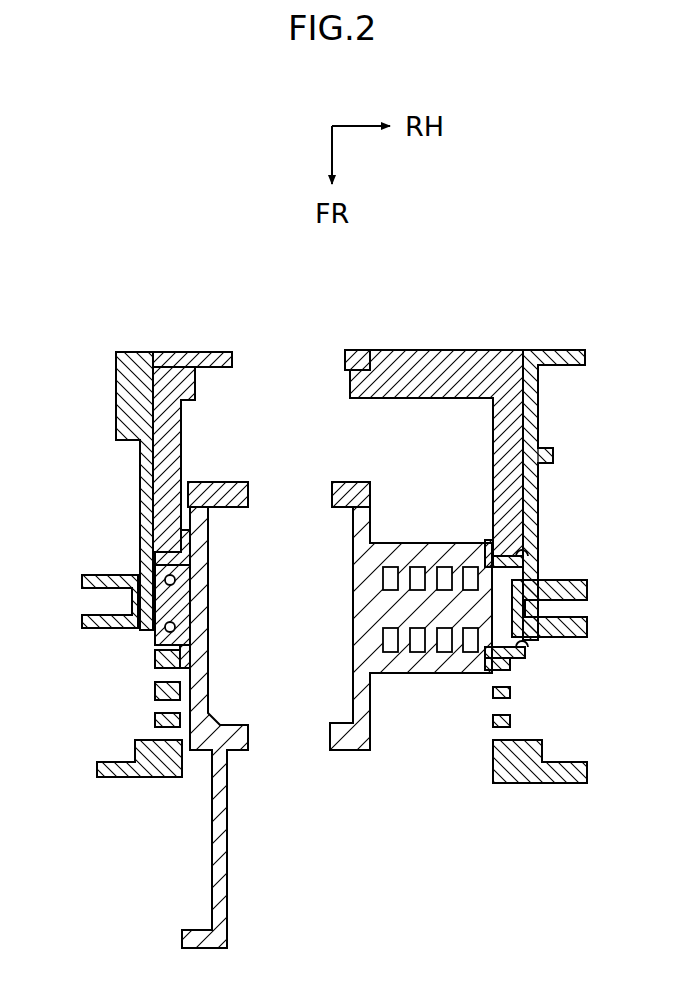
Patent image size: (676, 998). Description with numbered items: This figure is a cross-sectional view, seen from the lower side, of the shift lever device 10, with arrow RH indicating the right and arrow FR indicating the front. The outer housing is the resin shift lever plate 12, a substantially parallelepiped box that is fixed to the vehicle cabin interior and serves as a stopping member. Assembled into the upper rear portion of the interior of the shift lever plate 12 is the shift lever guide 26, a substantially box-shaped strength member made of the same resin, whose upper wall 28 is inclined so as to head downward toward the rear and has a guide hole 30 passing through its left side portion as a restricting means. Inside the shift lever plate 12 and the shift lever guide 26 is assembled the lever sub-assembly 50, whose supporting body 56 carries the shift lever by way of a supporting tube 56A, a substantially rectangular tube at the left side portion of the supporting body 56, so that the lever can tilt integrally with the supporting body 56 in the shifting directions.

The shift lever device 10 is at (112, 226).
The shift lever plate 12 is at (112, 386).
The shift lever guide 26 is at (196, 348).
The upper wall 28 is at (440, 348).
The guide hole 30 is at (343, 360).
The lever sub-assembly 50 is at (345, 758).
The supporting body 56 is at (392, 542).
The supporting tube 56A is at (250, 484).